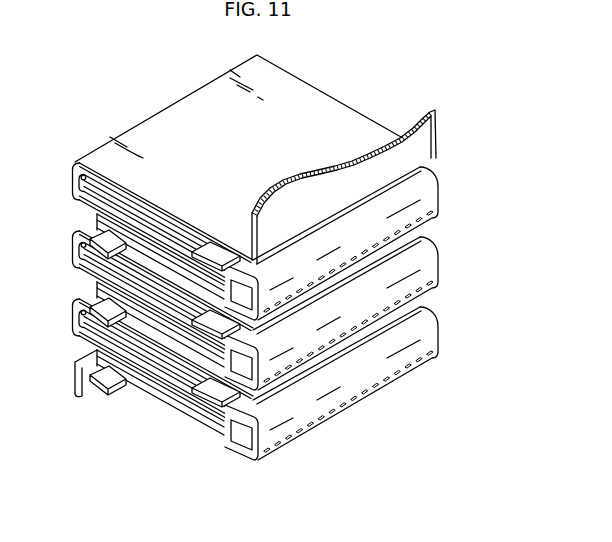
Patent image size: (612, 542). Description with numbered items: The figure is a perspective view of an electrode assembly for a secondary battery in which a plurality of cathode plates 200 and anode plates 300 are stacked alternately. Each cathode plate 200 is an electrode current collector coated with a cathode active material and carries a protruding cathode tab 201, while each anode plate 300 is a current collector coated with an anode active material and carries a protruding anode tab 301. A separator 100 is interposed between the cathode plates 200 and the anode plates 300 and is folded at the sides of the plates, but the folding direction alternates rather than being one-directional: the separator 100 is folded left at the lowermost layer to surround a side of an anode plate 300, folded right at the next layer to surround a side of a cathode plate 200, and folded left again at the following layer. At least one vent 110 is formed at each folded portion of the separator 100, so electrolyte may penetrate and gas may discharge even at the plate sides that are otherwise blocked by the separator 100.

The separator 100 is at (434, 203).
The vent 110 is at (83, 178).
The cathode plate 200 is at (426, 174).
The cathode tab 201 is at (203, 395).
The anode plate 300 is at (97, 220).
The anode tab 301 is at (103, 389).